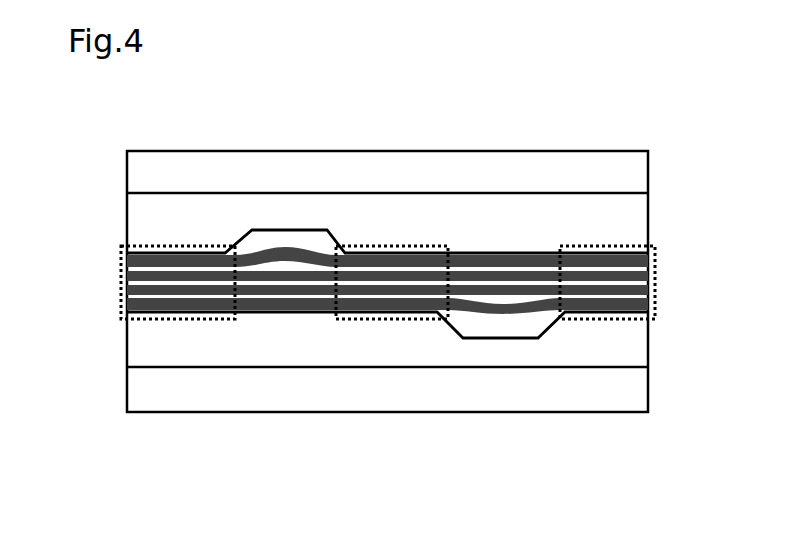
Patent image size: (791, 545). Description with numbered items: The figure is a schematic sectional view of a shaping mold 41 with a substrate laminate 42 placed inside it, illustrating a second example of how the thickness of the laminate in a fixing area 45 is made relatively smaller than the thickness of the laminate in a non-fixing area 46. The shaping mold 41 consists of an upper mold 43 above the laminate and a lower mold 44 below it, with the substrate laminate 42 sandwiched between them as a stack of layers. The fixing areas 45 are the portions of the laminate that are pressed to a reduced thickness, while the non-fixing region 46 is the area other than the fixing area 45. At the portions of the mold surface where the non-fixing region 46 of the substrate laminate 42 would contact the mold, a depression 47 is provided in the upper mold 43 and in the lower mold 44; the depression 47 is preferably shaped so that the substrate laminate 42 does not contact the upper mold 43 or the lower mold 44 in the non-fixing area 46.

The shaping mold 41 is at (93, 398).
The substrate laminate 42 is at (112, 315).
The upper mold 43 is at (145, 220).
The lower mold 44 is at (146, 349).
The fixing area 45 is at (178, 325).
The non-fixing region 46 is at (485, 242).
The depression 47 is at (298, 248).